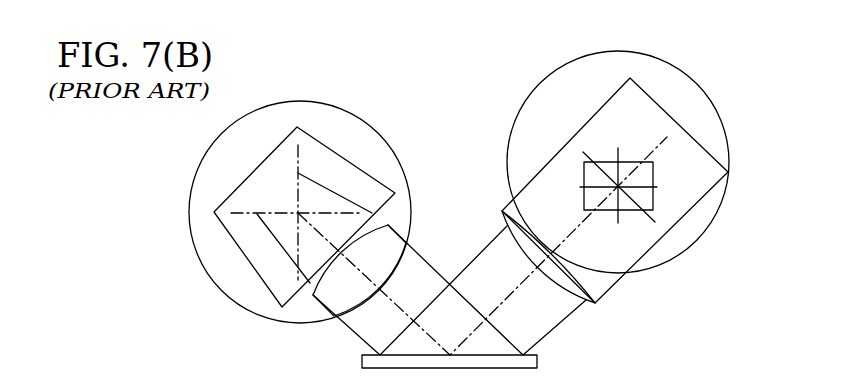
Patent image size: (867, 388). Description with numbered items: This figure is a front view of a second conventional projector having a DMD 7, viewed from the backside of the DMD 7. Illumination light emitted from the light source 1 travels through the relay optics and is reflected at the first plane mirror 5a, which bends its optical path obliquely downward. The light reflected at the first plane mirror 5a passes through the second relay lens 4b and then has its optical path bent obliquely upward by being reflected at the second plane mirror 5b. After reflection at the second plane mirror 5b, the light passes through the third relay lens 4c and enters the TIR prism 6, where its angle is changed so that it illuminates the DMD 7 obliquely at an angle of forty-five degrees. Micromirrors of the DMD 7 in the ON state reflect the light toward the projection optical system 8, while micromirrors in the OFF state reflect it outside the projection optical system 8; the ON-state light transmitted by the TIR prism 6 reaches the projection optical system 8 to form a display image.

The light source 1 is at (390, 150).
The first plane mirror 5a is at (232, 193).
The second relay lens 4b is at (410, 226).
The second plane mirror 5b is at (537, 361).
The third relay lens 4c is at (502, 212).
The TIR prism 6 is at (618, 281).
The DMD 7 is at (653, 172).
The projection optical system 8 is at (710, 95).